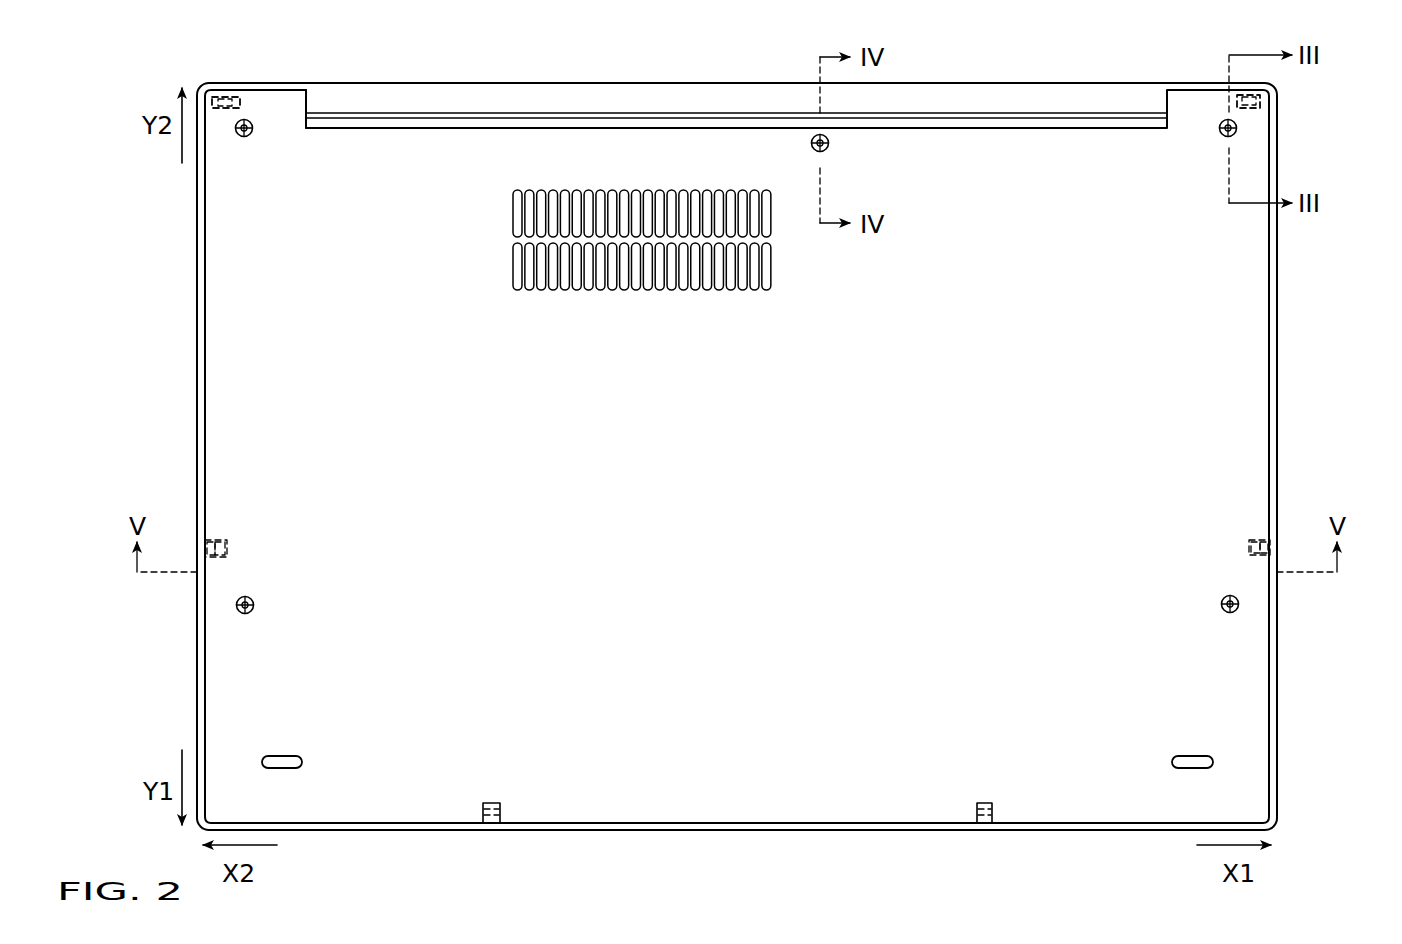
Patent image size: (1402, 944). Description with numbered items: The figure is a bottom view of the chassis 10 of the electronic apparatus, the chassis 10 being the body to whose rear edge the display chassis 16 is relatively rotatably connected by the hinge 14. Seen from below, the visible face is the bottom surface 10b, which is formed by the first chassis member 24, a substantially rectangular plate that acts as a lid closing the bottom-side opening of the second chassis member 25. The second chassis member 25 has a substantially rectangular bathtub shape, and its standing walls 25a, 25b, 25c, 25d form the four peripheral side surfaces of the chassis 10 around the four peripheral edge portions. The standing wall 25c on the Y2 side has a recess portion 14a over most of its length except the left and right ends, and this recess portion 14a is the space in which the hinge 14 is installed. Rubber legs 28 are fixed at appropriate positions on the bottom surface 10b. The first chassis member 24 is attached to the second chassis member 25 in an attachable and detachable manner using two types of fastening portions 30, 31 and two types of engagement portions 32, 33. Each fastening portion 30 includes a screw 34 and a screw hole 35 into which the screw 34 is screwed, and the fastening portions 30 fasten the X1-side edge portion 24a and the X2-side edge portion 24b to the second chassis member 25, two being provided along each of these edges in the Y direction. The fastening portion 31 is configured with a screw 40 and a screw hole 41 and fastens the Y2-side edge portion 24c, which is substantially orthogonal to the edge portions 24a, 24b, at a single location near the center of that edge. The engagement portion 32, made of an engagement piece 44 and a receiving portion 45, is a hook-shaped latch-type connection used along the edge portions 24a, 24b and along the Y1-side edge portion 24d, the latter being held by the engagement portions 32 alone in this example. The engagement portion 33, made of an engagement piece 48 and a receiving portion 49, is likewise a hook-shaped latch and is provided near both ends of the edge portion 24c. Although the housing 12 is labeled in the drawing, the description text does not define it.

The chassis 10 is at (118, 290).
The bottom surface 10b is at (237, 248).
The housing 12 is at (170, 50).
The hinge 14 is at (736, 49).
The display chassis 16 is at (527, 76).
The recess portion 14a is at (310, 100).
The first chassis member 24 is at (222, 308).
The edge portion 24a is at (1262, 410).
The edge portion 24b is at (212, 408).
The edge portion 24c is at (747, 130).
The edge portion 24d is at (736, 815).
The second chassis member 25 is at (190, 351).
The standing wall 25a is at (1278, 456).
The standing wall 25b is at (197, 455).
The standing wall 25c is at (1003, 113).
The standing wall 25d is at (820, 829).
The rubber leg 28 is at (450, 125).
The fastening portion 30 is at (819, 370).
The fastening portion 31 is at (899, 151).
The engagement portion 32 is at (292, 497).
The engagement portion 33 is at (277, 33).
The screw 34 is at (819, 370).
The screw hole 35 is at (253, 133).
The screw 40 is at (899, 151).
The screw hole 41 is at (830, 143).
The engagement piece 44 is at (228, 548).
The receiving portion 45 is at (216, 540).
The engagement piece 48 is at (236, 90).
The receiving portion 49 is at (206, 90).